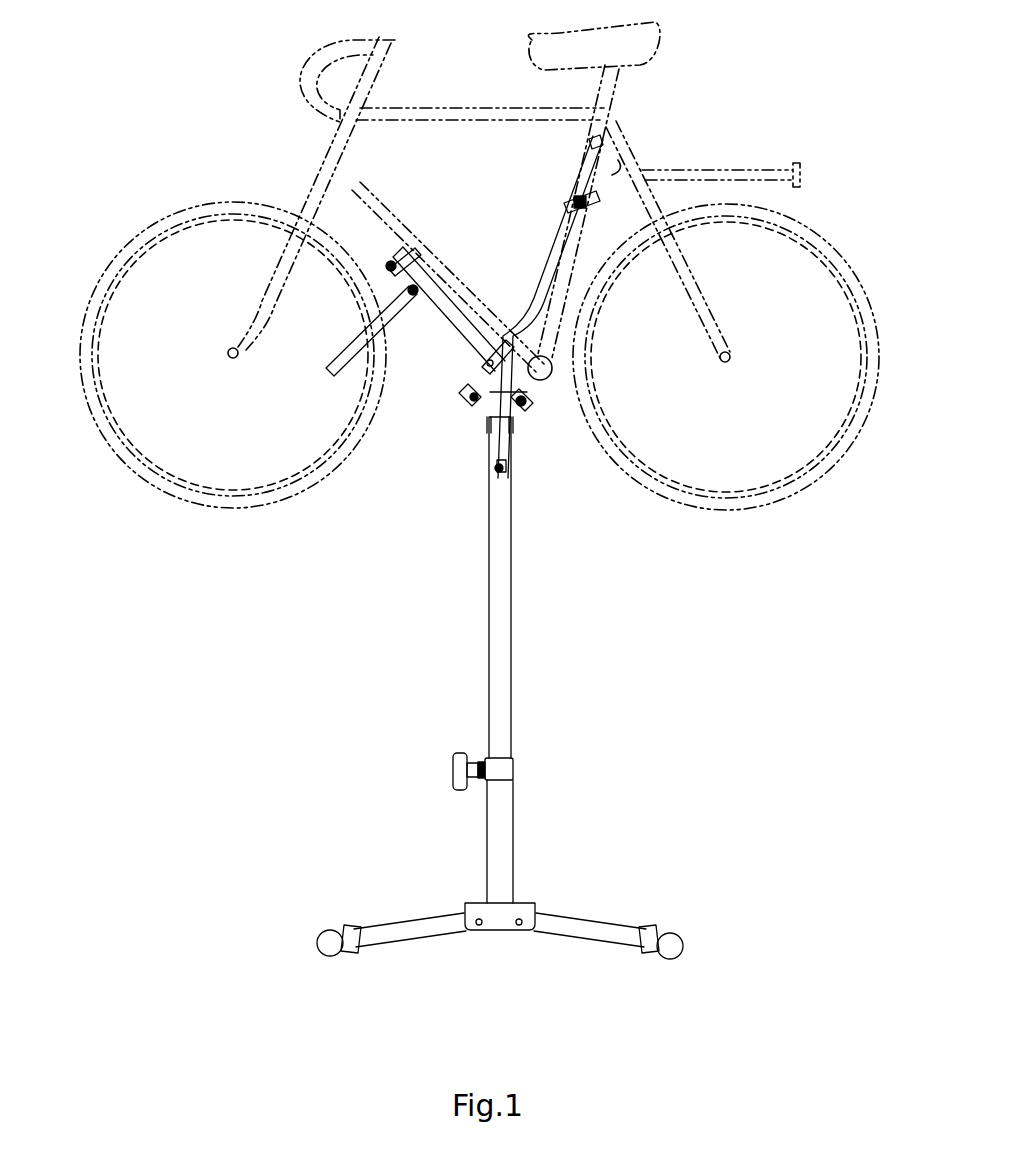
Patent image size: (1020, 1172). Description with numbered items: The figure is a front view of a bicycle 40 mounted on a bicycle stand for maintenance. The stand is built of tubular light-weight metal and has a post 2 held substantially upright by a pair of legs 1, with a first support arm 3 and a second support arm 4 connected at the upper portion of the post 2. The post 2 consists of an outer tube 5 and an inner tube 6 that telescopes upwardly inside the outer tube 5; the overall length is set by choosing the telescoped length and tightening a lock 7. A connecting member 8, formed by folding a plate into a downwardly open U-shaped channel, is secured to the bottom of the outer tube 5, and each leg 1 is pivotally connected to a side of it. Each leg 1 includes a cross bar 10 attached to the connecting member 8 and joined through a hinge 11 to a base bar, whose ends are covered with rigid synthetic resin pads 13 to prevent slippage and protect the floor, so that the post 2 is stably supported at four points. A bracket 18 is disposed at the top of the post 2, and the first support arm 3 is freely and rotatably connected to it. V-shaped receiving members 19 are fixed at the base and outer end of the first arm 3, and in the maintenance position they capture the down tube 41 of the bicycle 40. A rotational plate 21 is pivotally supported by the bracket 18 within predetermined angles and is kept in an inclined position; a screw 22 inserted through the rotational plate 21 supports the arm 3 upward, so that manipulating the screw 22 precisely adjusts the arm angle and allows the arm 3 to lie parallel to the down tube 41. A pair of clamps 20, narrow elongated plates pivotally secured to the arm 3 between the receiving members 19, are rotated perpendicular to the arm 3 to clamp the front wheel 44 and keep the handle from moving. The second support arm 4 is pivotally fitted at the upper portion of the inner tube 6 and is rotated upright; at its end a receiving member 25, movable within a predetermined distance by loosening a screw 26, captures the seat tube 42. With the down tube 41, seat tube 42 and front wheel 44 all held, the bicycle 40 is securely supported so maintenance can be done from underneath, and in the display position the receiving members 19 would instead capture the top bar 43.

The leg 1 is at (501, 919).
The post 2 is at (507, 660).
The first support arm 3 is at (455, 342).
The second support arm 4 is at (535, 280).
The outer tube 5 is at (513, 838).
The inner tube 6 is at (489, 588).
The lock 7 is at (470, 780).
The connecting member 8 is at (500, 930).
The cross bar 10 is at (420, 937).
The hinge 11 is at (348, 928).
The pad 13 is at (316, 944).
The bracket 18 is at (518, 414).
The receiving member 19 is at (420, 250).
The clamp 20 is at (330, 376).
The rotational plate 21 is at (488, 420).
The screw 22 is at (460, 398).
The receiving member 25 is at (570, 198).
The screw 26 is at (572, 206).
The bicycle 40 is at (479, 266).
The down tube 41 is at (396, 203).
The seat tube 42 is at (630, 136).
The top bar 43 is at (458, 108).
The front wheel 44 is at (226, 200).